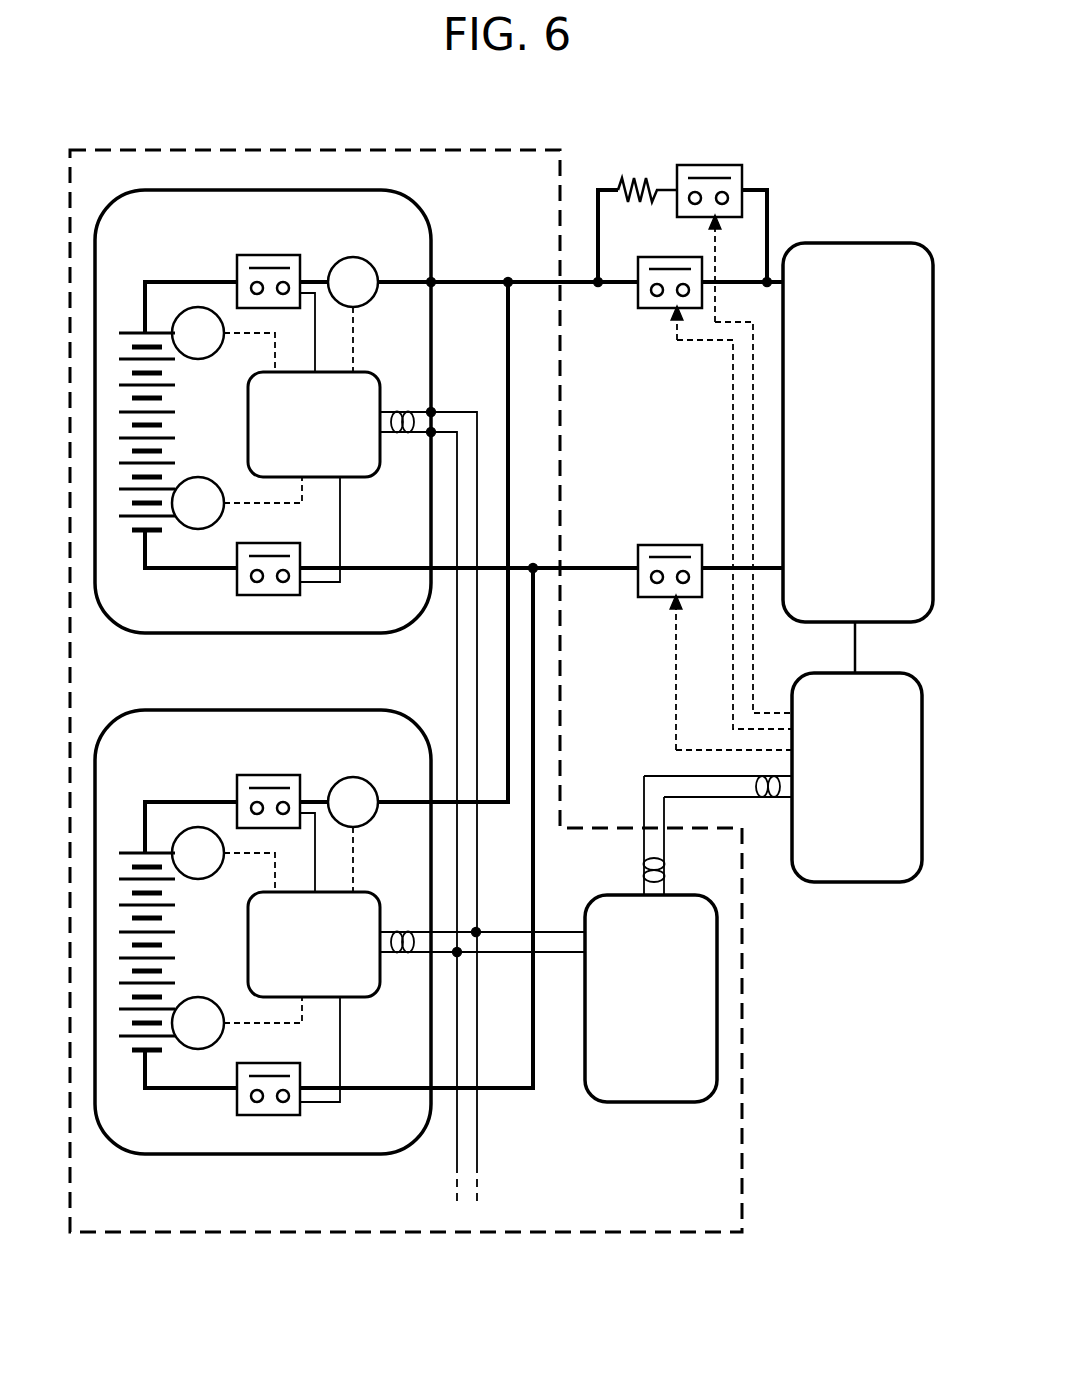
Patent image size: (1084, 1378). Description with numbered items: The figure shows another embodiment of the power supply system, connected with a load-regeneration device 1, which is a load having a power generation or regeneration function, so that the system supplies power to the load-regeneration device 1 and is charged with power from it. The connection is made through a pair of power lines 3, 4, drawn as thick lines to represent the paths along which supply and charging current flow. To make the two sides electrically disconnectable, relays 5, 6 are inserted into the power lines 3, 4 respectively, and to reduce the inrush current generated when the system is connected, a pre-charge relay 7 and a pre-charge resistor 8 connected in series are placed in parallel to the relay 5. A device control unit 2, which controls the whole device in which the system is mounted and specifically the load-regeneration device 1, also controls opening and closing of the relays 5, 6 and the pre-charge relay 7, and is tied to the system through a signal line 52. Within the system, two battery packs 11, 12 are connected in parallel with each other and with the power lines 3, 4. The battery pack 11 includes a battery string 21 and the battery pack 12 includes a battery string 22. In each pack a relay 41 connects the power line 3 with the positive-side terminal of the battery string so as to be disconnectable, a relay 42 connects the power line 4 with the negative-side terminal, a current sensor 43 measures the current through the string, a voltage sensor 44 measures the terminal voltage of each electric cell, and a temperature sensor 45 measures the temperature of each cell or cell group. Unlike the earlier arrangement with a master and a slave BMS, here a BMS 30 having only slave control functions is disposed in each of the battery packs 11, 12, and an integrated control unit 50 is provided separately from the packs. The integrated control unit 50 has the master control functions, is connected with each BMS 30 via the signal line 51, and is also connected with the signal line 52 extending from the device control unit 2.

The load-regeneration device 1 is at (860, 246).
The device control unit 2 is at (852, 882).
The power line 3 is at (578, 287).
The power line 4 is at (717, 565).
The relay 5 is at (651, 308).
The relay 6 is at (665, 545).
The pre-charge relay 7 is at (726, 170).
The pre-charge resistor 8 is at (641, 180).
The battery pack 11 is at (421, 222).
The battery pack 12 is at (400, 722).
The battery string 21 is at (108, 327).
The battery string 22 is at (108, 847).
The BMS 30 is at (370, 374).
The relay 41 is at (265, 257).
The relay 42 is at (240, 585).
The current sensor 43 is at (356, 258).
The voltage sensor 44 is at (206, 358).
The temperature sensor 45 is at (200, 477).
The integrated control unit 50 is at (641, 1102).
The signal line 51 is at (457, 645).
The signal line 52 is at (652, 776).